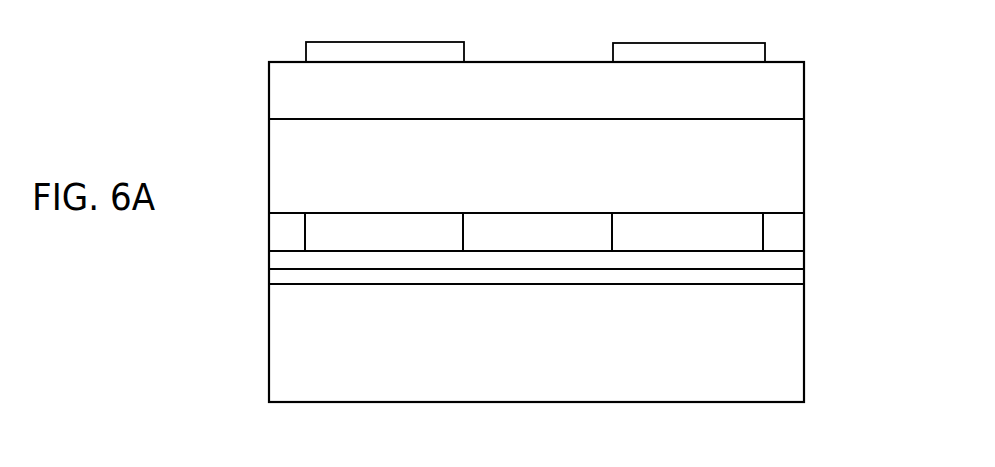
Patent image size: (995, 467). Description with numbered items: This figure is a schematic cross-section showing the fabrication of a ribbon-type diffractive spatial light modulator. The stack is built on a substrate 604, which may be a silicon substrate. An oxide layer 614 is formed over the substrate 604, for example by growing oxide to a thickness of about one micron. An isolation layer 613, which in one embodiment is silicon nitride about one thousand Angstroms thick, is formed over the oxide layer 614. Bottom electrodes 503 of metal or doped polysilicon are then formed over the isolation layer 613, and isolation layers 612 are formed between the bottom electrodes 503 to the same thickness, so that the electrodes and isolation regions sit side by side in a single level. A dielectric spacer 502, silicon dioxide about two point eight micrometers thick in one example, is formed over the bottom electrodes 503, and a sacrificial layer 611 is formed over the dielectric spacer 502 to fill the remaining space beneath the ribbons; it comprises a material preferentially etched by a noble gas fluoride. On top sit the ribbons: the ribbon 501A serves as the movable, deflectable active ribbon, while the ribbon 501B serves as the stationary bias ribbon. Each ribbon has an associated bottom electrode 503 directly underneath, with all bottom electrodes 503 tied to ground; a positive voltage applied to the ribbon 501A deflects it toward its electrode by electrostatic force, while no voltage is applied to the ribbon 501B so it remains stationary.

The ribbon 501A is at (343, 48).
The ribbon 501B is at (652, 48).
The sacrificial layer 611 is at (560, 103).
The dielectric spacer 502 is at (560, 169).
The bottom electrodes 503 is at (401, 243).
The isolation layers 612 is at (278, 229).
The isolation layer 613 is at (283, 260).
The oxide layer 614 is at (793, 279).
The substrate 604 is at (569, 330).